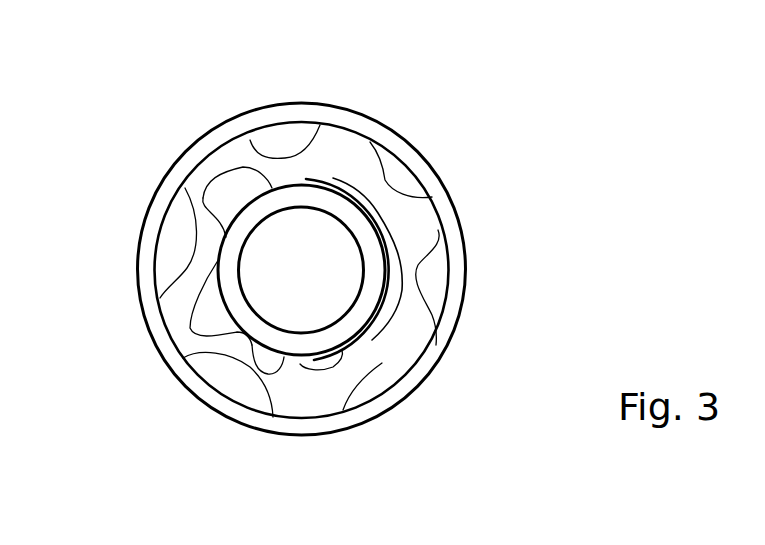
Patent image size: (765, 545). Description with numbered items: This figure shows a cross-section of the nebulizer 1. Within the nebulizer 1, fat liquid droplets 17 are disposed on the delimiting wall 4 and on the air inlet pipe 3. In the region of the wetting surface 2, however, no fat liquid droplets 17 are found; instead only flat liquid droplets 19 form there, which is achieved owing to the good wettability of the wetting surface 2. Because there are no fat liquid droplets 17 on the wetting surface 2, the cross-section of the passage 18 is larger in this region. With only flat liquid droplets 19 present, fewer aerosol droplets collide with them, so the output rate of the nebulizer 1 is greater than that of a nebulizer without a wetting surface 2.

The nebulizer 1 is at (576, 185).
The wetting surface 2 is at (350, 350).
The air inlet pipe 3 is at (313, 182).
The delimiting wall 4 is at (420, 152).
The fat liquid droplets 17 is at (227, 183).
The passage 18 is at (381, 259).
The flat liquid droplets 19 is at (372, 338).